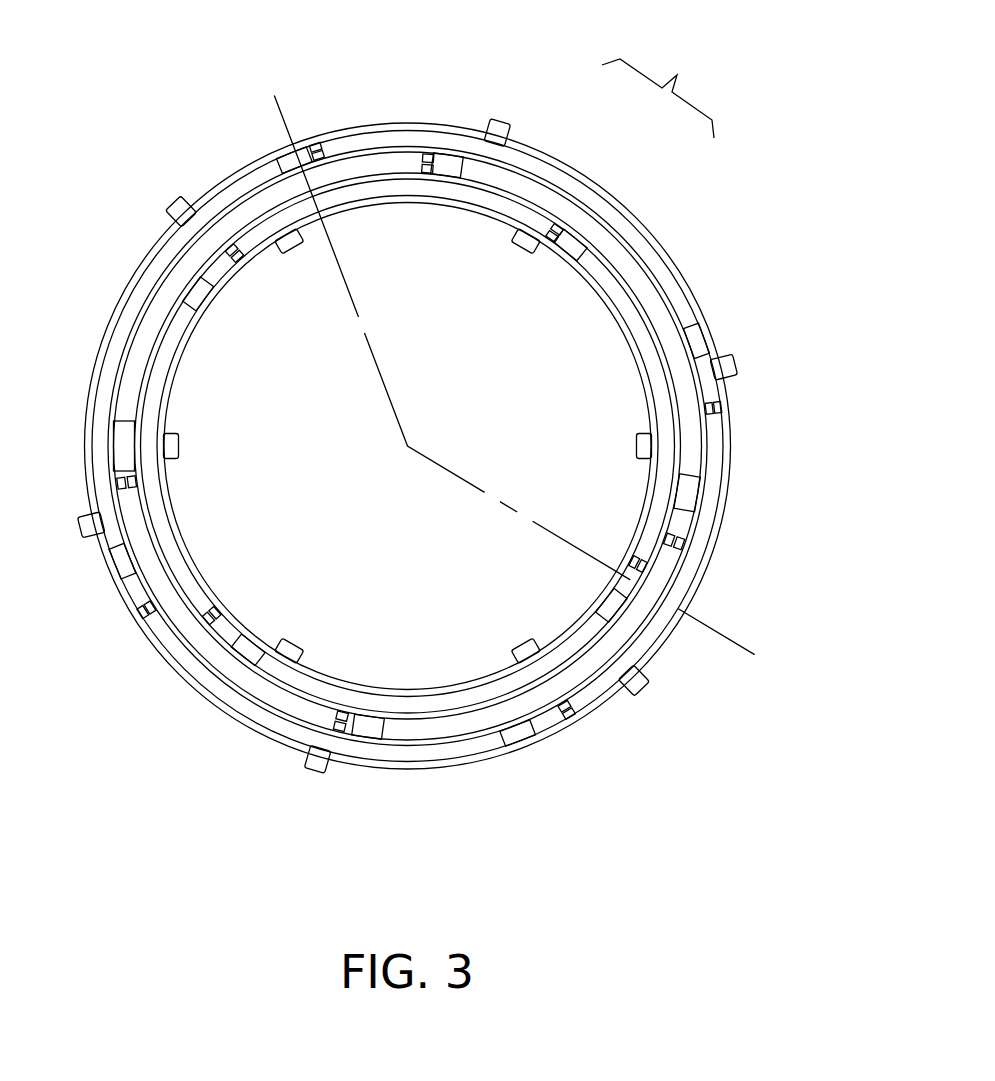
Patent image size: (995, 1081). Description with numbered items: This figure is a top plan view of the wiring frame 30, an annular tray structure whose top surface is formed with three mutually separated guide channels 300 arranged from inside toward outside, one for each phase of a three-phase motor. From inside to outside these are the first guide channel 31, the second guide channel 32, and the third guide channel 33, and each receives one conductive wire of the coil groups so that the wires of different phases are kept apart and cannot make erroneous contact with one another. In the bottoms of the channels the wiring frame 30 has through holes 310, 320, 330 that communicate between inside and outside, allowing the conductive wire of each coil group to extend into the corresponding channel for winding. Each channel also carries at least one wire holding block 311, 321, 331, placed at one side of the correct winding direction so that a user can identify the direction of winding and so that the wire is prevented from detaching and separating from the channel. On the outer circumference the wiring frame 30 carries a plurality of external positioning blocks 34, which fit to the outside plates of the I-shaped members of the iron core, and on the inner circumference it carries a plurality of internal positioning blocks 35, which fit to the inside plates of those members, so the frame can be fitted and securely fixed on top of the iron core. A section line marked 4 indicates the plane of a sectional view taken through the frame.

The wiring frame 30 is at (148, 255).
The guide channels 300 is at (661, 88).
The first guide channel 31 is at (522, 212).
The second guide channel 32 is at (581, 218).
The third guide channel 33 is at (636, 238).
The external positioning blocks 34 is at (745, 361).
The internal positioning blocks 35 is at (637, 452).
The through hole 310 is at (569, 257).
The wire holding block 311 is at (550, 250).
The through hole 320 is at (448, 165).
The wire holding block 321 is at (428, 160).
The through hole 330 is at (300, 155).
The wire holding block 331 is at (316, 146).
The section line 4- 4 is at (259, 100).